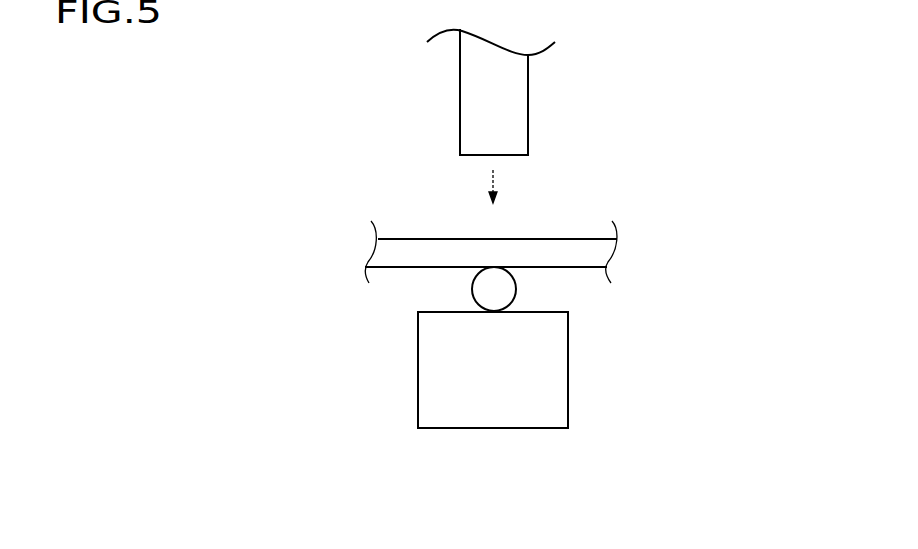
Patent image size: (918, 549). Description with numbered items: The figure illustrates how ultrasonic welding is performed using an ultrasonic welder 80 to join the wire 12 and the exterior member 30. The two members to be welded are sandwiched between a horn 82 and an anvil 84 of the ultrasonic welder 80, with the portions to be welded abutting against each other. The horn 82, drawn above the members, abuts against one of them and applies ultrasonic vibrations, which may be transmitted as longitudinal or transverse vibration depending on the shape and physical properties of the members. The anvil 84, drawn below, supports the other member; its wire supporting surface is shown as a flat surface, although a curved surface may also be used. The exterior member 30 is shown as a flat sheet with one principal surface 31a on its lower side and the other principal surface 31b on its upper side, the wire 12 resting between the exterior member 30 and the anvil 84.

The ultrasonic welder 80 is at (672, 173).
The horn 82 is at (517, 139).
The anvil 84 is at (542, 333).
The exterior member 30 is at (392, 252).
The one principal surface 31a is at (402, 268).
The other principal surface 31b is at (432, 238).
The wire 12 is at (471, 290).